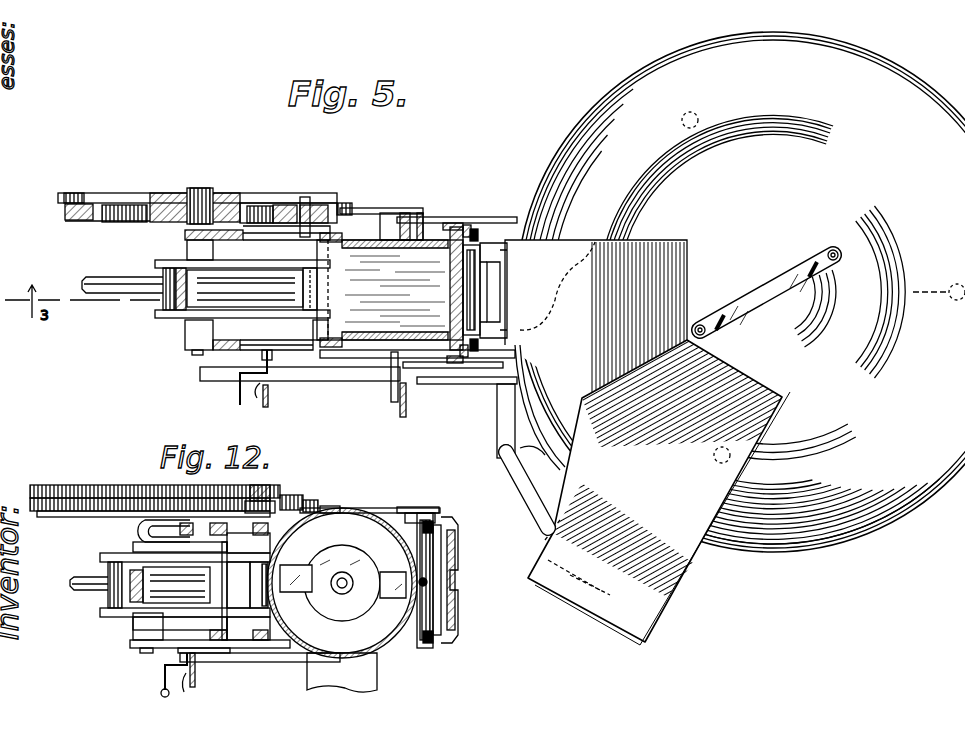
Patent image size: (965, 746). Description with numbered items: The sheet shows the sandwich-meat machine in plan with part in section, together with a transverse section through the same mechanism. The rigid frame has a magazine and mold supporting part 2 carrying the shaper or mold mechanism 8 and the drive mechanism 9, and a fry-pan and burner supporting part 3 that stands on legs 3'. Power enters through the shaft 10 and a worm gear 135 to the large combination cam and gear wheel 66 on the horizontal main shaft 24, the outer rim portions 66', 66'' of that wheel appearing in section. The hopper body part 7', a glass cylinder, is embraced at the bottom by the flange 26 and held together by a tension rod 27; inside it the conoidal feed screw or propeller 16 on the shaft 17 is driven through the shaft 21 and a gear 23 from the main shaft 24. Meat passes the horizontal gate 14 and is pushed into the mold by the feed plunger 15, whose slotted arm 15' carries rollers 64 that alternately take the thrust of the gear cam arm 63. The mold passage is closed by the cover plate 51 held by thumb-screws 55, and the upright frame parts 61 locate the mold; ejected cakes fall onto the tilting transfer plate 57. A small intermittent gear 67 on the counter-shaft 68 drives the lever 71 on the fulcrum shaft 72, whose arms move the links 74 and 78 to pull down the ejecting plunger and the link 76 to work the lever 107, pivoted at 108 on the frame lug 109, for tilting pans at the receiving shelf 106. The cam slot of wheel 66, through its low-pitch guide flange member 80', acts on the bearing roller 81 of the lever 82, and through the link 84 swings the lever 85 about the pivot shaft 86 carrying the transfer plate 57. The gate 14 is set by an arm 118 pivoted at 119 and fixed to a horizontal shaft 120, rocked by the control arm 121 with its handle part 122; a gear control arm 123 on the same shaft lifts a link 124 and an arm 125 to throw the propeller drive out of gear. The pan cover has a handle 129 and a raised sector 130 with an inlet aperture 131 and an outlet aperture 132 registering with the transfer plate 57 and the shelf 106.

In FIG. 12, the magazine and mold supporting part 2 is at (135, 632).
In FIG. 5, the fry-pan and burner supporting part 3 is at (741, 292).
In FIG. 5, the legs 3' is at (823, 291).
In FIG. 12, the body part 7' is at (342, 566).
In FIG. 5, the shaper or mold mechanism 8 is at (462, 298).
In FIG. 5, the drive mechanism 9 is at (107, 232).
In FIG. 5, the shaft 10 is at (106, 280).
In FIG. 12, the shaft 10 is at (86, 578).
In FIG. 12, the horizontal gate 14 is at (365, 668).
In FIG. 5, the feed plunger 15 is at (390, 260).
In FIG. 12, the slotted arm 15' is at (133, 626).
In FIG. 12, the feed screw or propeller 16 is at (440, 578).
In FIG. 12, the shaft 17 is at (340, 575).
In FIG. 12, the shaft 21 is at (172, 526).
In FIG. 5, the gear 23 is at (172, 200).
In FIG. 5, the horizontal main shaft 24 is at (202, 190).
In FIG. 12, the horizontal main shaft 24 is at (146, 645).
In FIG. 12, the flange 26 is at (438, 550).
In FIG. 12, the tension rod 27 is at (430, 584).
In FIG. 5, the cover plate 51 is at (458, 268).
In FIG. 5, the thumb-screws 55 is at (475, 229).
In FIG. 12, the thumb-screws 55 is at (436, 640).
In FIG. 5, the transfer plate 57 is at (464, 283).
In FIG. 12, the transfer plate 57 is at (440, 600).
In FIG. 5, the upright frame parts 61 is at (465, 225).
In FIG. 5, the gear cam arm 63 is at (275, 283).
In FIG. 12, the gear cam arm 63 is at (206, 578).
In FIG. 5, the rollers 64 is at (162, 266).
In FIG. 12, the rollers 64 is at (96, 600).
In FIG. 5, the combination cam and gear wheel 66 is at (197, 186).
In FIG. 12, the combination cam and gear wheel 66 is at (155, 490).
In FIG. 5, the gear ring 66' is at (52, 193).
In FIG. 5, the gear teeth 66'' is at (83, 210).
In FIG. 5, the intermittent gear 67 is at (347, 204).
In FIG. 12, the intermittent gear 67 is at (305, 500).
In FIG. 5, the counter-shaft 68 is at (320, 250).
In FIG. 12, the counter-shaft 68 is at (272, 548).
In FIG. 5, the lever 71 is at (482, 366).
In FIG. 5, the fulcrum shaft 72 is at (401, 226).
In FIG. 5, the link 74 is at (464, 358).
In FIG. 5, the link 76 is at (490, 384).
In FIG. 5, the link 78 is at (452, 223).
In FIG. 5, the guide flange member 80' is at (179, 199).
In FIG. 5, the bearing roller 81 is at (305, 207).
In FIG. 12, the bearing roller 81 is at (280, 495).
In FIG. 5, the lever 82 is at (272, 235).
In FIG. 12, the lever 82 is at (252, 490).
In FIG. 5, the link 84 is at (402, 208).
In FIG. 12, the link 84 is at (332, 498).
In FIG. 5, the lever 85 is at (495, 217).
In FIG. 12, the lever 85 is at (432, 508).
In FIG. 5, the pivot shaft 86 is at (500, 285).
In FIG. 5, the receiving shelf 106 is at (615, 622).
In FIG. 5, the lever 107 is at (500, 417).
In FIG. 5, the pivot 108 is at (497, 450).
In FIG. 5, the frame lug 109 is at (516, 452).
In FIG. 5, the arm 118 is at (398, 408).
In FIG. 5, the pivot 119 is at (391, 385).
In FIG. 5, the horizontal shaft 120 is at (298, 381).
In FIG. 12, the horizontal shaft 120 is at (242, 662).
In FIG. 5, the control arm 121 is at (238, 395).
In FIG. 12, the control arm 121 is at (163, 677).
In FIG. 12, the handle part 122 is at (160, 693).
In FIG. 5, the gear control arm 123 is at (270, 395).
In FIG. 12, the gear control arm 123 is at (200, 680).
In FIG. 5, the link 124 is at (258, 400).
In FIG. 12, the link 124 is at (195, 688).
In FIG. 12, the arm 125 is at (176, 655).
In FIG. 5, the handle 129 is at (757, 292).
In FIG. 5, the raised sector 130 is at (700, 380).
In FIG. 5, the inlet aperture 131 is at (575, 240).
In FIG. 5, the outlet aperture 132 is at (680, 560).
In FIG. 5, the worm gear 135 is at (176, 308).